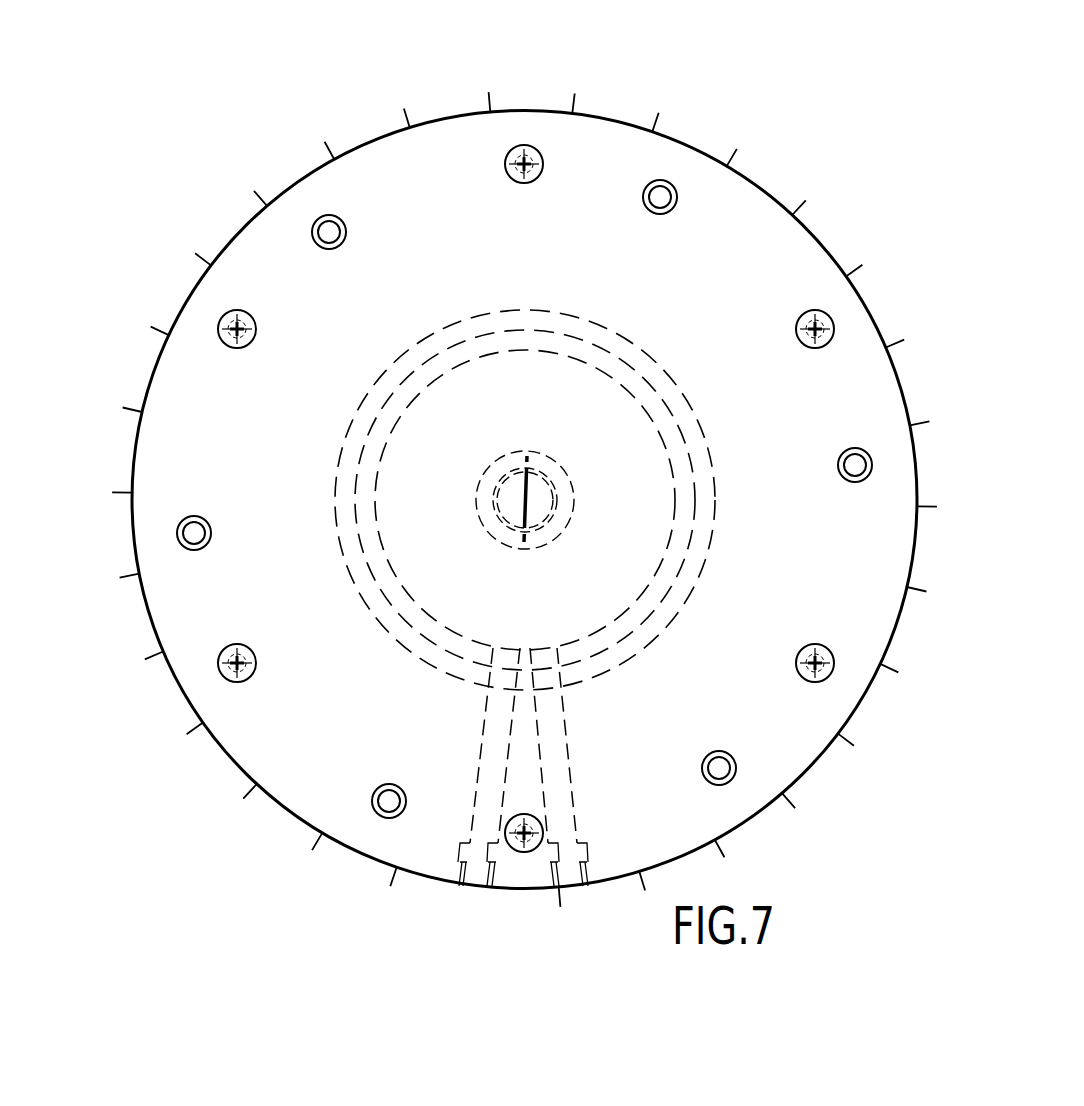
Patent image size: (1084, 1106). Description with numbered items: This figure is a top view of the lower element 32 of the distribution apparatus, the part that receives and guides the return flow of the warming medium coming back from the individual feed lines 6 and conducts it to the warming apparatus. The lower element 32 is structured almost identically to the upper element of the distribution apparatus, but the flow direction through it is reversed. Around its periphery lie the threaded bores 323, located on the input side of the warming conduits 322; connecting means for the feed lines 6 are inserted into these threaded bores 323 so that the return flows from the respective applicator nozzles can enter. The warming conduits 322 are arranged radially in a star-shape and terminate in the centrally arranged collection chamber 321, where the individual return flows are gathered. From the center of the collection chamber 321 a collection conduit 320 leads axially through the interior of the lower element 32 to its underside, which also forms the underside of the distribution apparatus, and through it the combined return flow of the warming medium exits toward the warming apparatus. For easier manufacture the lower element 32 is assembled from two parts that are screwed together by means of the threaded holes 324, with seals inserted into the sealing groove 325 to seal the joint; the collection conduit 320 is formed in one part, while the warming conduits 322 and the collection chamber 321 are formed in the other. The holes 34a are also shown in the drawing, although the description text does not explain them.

The lower element 32 is at (774, 175).
The threaded bores 323 is at (404, 118).
The threaded holes 324 is at (541, 178).
The holes 34a is at (672, 213).
The sealing groove 325 is at (612, 349).
The collection chamber 321 is at (591, 441).
The collection conduit 320 is at (553, 520).
The warming conduits 322 is at (484, 742).
The feed lines 6 is at (527, 129).